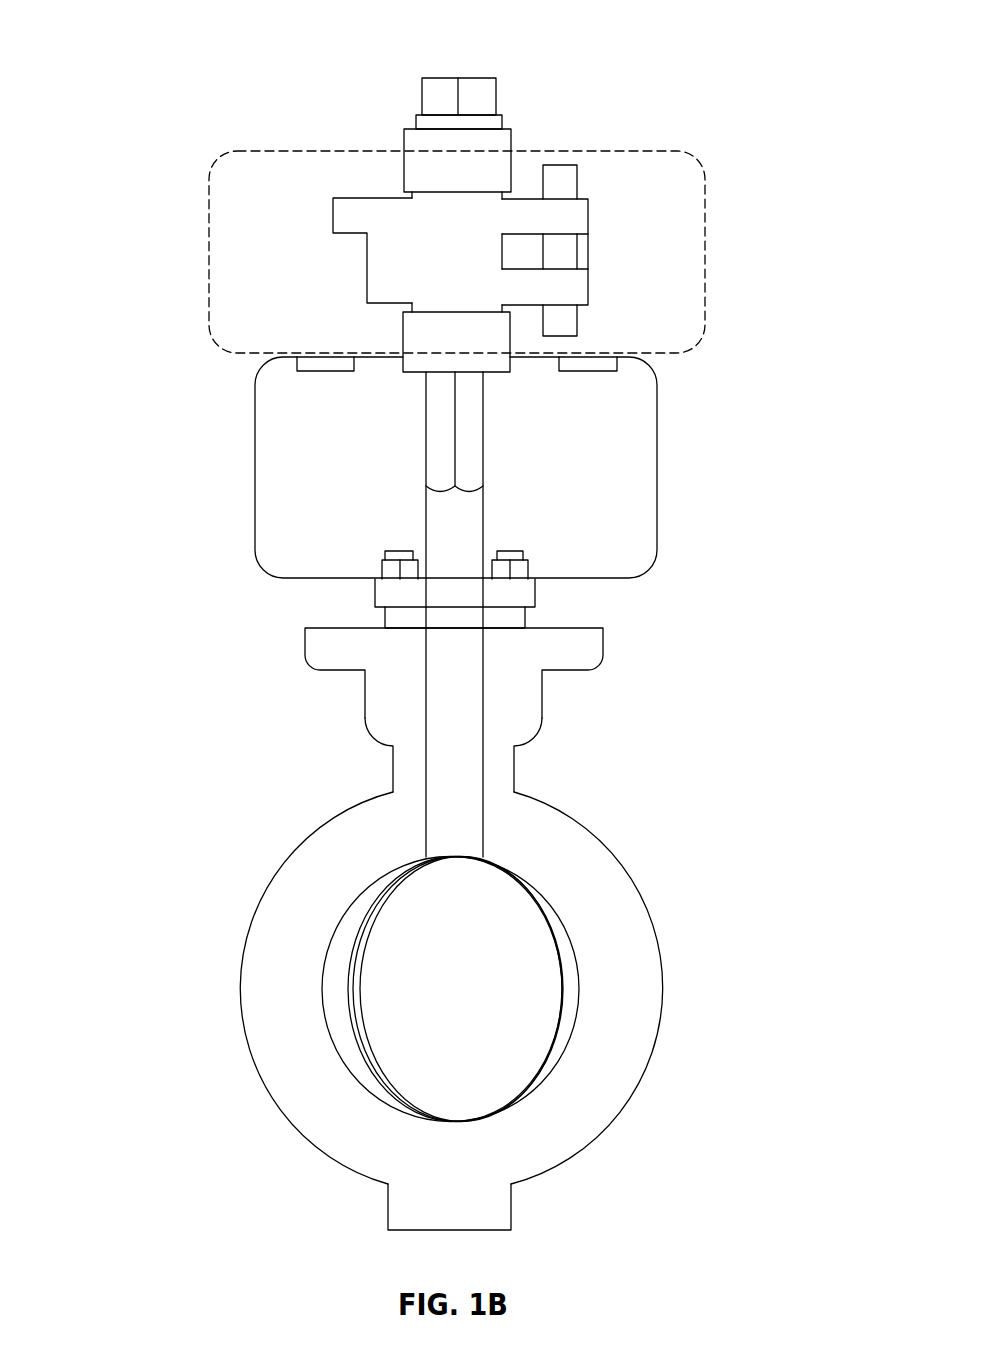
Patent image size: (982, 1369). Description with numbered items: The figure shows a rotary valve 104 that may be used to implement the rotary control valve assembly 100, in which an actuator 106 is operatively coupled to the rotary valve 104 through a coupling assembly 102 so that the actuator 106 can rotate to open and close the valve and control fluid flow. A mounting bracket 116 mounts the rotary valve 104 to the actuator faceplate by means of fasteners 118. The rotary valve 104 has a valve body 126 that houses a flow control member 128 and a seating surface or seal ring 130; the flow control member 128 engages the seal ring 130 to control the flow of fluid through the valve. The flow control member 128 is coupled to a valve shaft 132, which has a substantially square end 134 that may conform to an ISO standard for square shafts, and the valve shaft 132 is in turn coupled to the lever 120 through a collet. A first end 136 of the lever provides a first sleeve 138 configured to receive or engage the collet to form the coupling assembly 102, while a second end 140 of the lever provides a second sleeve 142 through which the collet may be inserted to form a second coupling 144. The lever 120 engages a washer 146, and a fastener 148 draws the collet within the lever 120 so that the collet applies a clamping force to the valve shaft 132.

The rotary control valve assembly 100 is at (183, 39).
The coupling assembly 102 is at (384, 318).
The rotary valve 104 is at (650, 952).
The actuator 106 is at (707, 263).
The mounting bracket 116 is at (255, 428).
The fasteners 118 is at (340, 373).
The lever 120 is at (360, 197).
The valve body 126 is at (268, 940).
The flow control member 128 is at (485, 1001).
The seal ring 130 is at (347, 1068).
The valve shaft 132 is at (440, 518).
The square end 134 is at (485, 443).
The first end 136 is at (512, 345).
The first sleeve 138 is at (402, 345).
The second end 140 is at (468, 195).
The second sleeve 142 is at (512, 165).
The second coupling 144 is at (525, 133).
The washer 146 is at (417, 123).
The fastener 148 is at (498, 87).